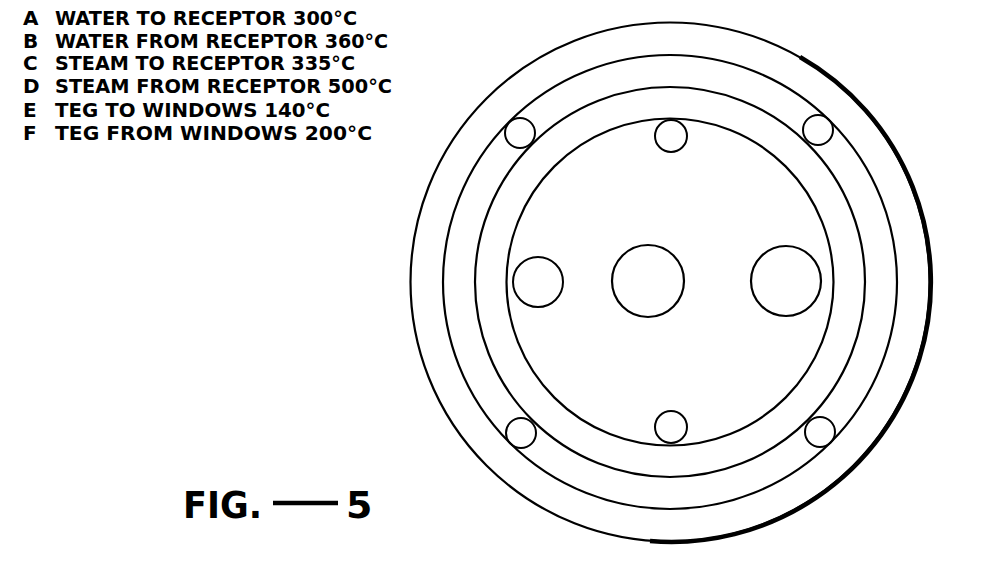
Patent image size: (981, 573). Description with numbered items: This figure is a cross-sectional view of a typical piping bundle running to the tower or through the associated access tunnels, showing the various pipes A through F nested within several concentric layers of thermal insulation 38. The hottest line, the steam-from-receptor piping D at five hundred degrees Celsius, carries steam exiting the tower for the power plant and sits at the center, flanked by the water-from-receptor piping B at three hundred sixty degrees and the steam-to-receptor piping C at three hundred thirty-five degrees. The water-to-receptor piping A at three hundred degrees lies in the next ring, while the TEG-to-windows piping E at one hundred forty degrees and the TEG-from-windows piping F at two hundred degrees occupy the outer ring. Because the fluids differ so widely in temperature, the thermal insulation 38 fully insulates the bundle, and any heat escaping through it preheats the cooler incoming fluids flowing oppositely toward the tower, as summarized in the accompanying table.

The thermal insulation 38 is at (426, 269).
The water to receptor piping A is at (671, 281).
The water from receptor piping B is at (538, 282).
The steam to receptor piping C is at (786, 281).
The steam from receptor piping D is at (648, 281).
The TEG to windows piping E is at (670, 282).
The TEG from windows piping F is at (669, 281).